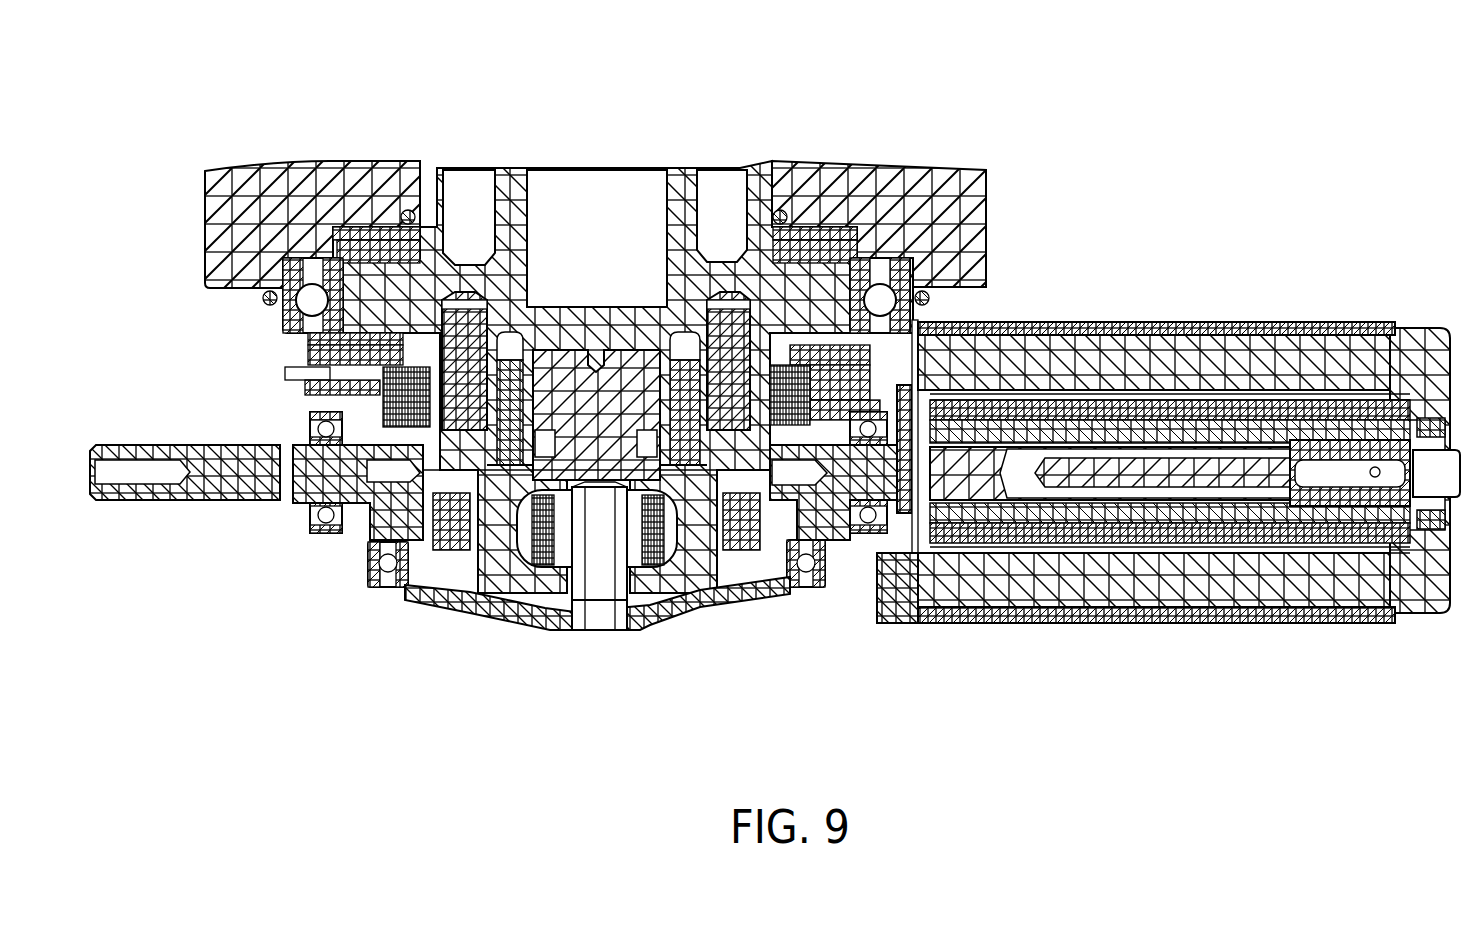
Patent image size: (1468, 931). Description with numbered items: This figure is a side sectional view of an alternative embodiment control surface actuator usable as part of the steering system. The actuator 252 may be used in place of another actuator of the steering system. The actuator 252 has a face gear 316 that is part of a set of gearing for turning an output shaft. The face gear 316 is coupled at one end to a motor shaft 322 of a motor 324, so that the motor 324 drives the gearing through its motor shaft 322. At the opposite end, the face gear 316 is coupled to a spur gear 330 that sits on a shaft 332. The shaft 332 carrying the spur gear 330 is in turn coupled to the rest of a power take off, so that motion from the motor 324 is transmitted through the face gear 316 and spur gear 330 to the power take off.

The actuator 252 is at (300, 135).
The face gear 316 is at (446, 600).
The motor shaft 322 is at (865, 458).
The motor 324 is at (1193, 325).
The spur gear 330 is at (360, 493).
The shaft 332 is at (205, 467).